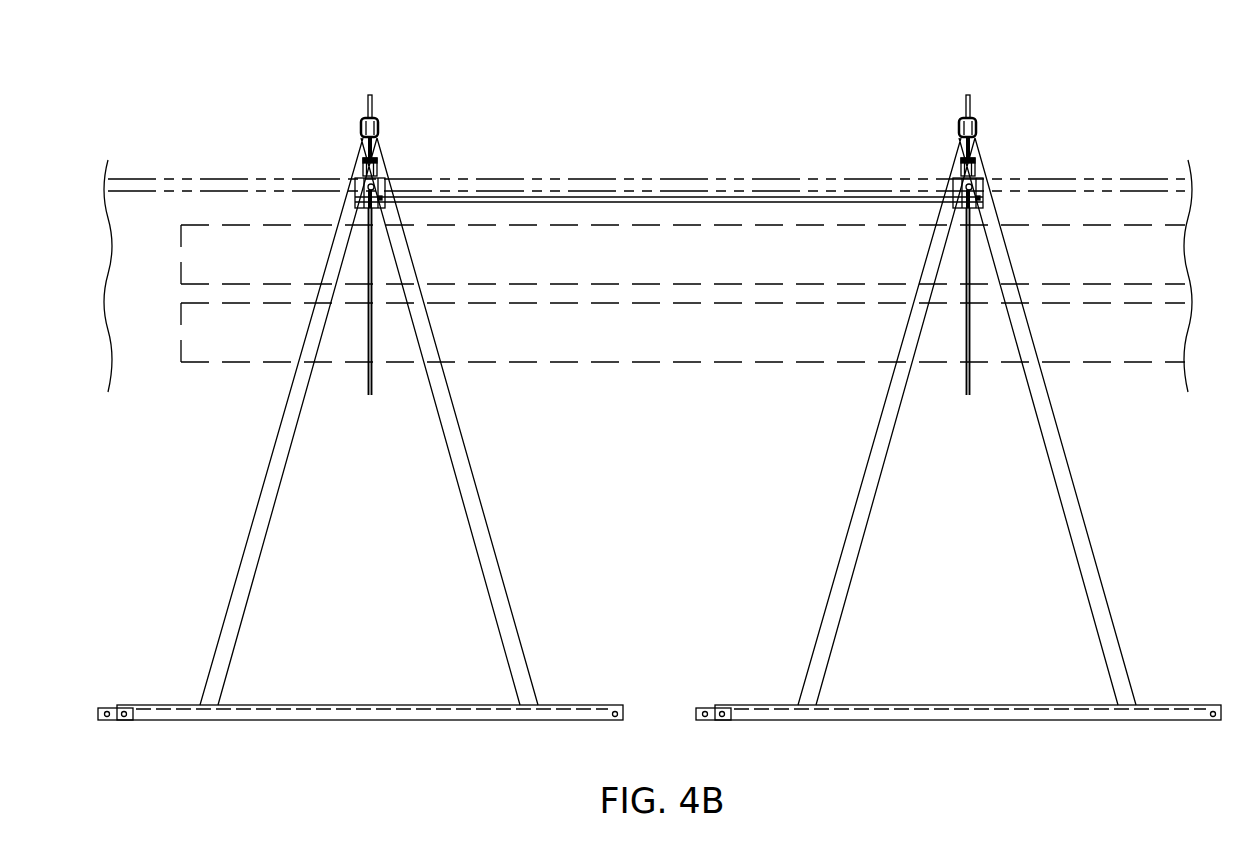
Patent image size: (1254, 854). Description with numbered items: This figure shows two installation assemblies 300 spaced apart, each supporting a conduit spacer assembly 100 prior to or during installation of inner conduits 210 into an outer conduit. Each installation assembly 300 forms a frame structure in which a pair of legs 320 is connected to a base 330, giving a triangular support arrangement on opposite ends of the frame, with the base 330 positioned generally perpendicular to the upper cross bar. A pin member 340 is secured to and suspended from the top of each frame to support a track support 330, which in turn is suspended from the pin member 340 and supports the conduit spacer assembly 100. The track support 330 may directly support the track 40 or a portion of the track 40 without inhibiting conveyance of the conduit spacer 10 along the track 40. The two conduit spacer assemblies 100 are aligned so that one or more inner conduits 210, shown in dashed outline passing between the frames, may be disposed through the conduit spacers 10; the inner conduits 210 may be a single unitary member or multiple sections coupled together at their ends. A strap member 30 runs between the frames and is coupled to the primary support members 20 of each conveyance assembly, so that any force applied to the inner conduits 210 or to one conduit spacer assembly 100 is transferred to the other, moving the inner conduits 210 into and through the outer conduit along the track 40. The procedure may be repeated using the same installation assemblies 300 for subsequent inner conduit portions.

The conduit spacer 10 is at (377, 389).
The primary support member 20 is at (386, 191).
The strap member 30 is at (722, 199).
The track 40 is at (789, 178).
The conduit spacer assembly 100 is at (378, 246).
The inner conduit 210 is at (181, 265).
The installation assembly 300 is at (330, 98).
The leg 320 is at (268, 537).
The base 330 is at (378, 165).
The pin member 340 is at (378, 140).